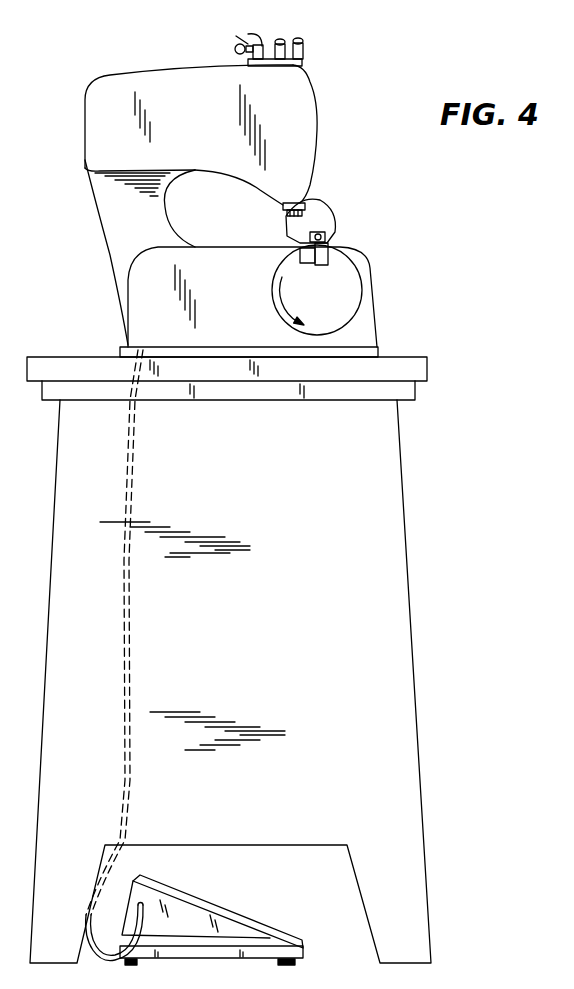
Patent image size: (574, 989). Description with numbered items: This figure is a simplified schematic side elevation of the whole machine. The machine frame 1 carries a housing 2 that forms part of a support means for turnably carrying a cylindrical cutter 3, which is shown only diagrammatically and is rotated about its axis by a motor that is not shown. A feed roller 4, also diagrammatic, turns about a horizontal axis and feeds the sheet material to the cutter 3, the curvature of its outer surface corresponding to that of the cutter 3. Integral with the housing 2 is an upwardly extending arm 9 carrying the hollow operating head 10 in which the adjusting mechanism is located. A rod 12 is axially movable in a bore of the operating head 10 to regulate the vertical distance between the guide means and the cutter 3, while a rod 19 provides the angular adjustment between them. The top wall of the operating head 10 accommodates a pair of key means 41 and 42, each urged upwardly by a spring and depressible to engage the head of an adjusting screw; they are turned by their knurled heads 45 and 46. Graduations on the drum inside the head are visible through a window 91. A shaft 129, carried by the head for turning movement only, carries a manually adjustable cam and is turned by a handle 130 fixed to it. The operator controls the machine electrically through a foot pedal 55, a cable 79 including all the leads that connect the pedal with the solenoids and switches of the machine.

The machine frame 1 is at (390, 680).
The housing 2 is at (360, 333).
The cylindrical cutter 3 is at (343, 305).
The feed roller 4 is at (333, 250).
The upwardly extending arm 9 is at (120, 198).
The operating head 10 is at (302, 93).
The rod 12 is at (312, 208).
The rod 19 is at (304, 196).
The key means 41 is at (258, 45).
The key means 42 is at (302, 60).
The knurled head 45 is at (282, 40).
The knurled head 46 is at (302, 41).
The foot pedal 55 is at (190, 907).
The cable 79 is at (127, 810).
The window 91 is at (315, 124).
The shaft 129 is at (230, 38).
The handle 130 is at (235, 50).